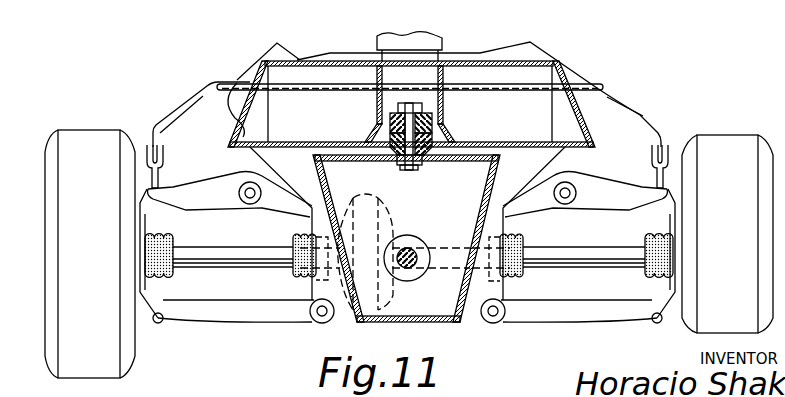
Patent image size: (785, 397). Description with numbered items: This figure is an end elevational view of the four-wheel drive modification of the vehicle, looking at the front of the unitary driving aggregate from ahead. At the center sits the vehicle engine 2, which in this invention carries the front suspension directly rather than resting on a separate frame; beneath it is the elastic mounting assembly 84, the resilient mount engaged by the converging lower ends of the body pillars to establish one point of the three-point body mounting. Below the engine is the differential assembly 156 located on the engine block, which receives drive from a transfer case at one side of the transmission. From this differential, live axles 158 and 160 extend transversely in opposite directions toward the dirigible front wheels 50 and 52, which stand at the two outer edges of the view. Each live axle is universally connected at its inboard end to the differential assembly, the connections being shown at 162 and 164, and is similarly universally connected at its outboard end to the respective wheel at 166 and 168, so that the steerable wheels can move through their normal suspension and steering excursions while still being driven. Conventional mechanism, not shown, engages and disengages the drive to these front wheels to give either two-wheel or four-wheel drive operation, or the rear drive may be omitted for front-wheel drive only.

The vehicle engine 2 is at (483, 47).
The front wheel 50 is at (730, 128).
The front wheel 52 is at (89, 128).
The elastic mounting assembly 84 is at (437, 113).
The differential assembly 156 is at (391, 213).
The live axle 158 is at (542, 248).
The live axle 160 is at (200, 248).
The universal connection 162 is at (522, 280).
The universal connection 164 is at (294, 275).
The universal connection 166 is at (646, 280).
The universal connection 168 is at (174, 273).